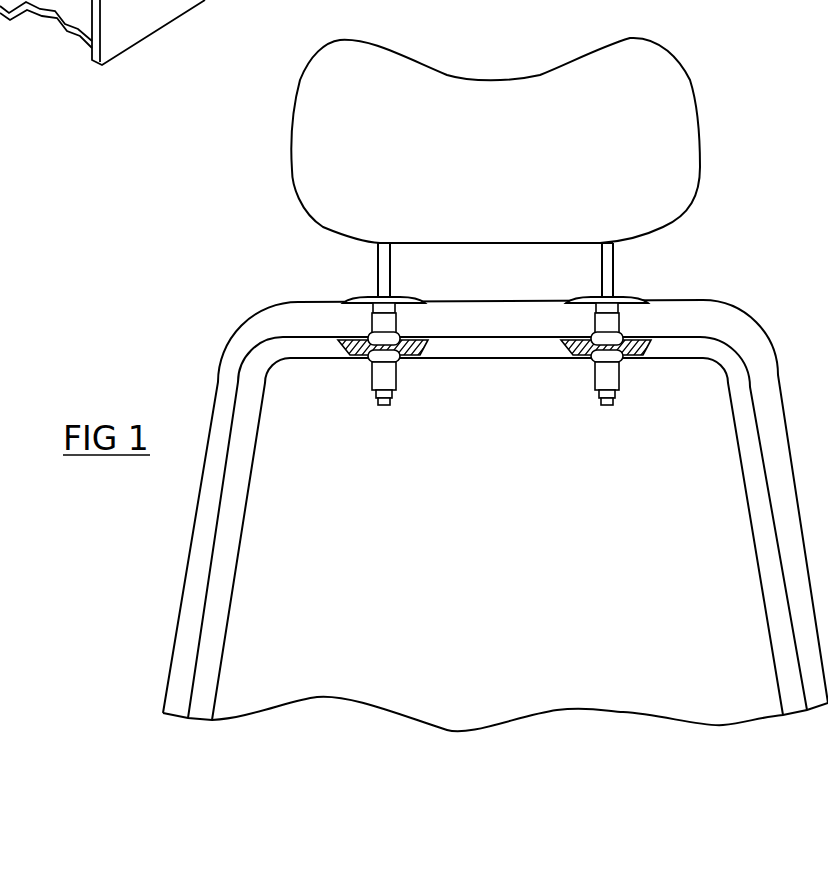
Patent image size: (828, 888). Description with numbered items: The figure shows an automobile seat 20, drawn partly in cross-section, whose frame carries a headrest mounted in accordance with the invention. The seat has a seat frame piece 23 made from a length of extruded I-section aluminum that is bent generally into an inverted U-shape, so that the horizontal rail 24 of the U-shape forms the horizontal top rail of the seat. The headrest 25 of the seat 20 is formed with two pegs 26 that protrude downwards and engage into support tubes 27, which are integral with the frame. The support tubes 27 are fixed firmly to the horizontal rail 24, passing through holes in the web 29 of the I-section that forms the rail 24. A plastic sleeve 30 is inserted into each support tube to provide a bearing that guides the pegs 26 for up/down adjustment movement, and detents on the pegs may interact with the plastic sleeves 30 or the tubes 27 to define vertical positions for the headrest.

The automobile seat 20 is at (469, 515).
The seat frame piece 23 is at (238, 460).
The horizontal rail 24 is at (508, 347).
The headrest 25 is at (573, 93).
The pegs 26 is at (382, 262).
The support tubes 27 is at (380, 375).
The web 29 is at (417, 350).
The plastic sleeve 30 is at (372, 297).